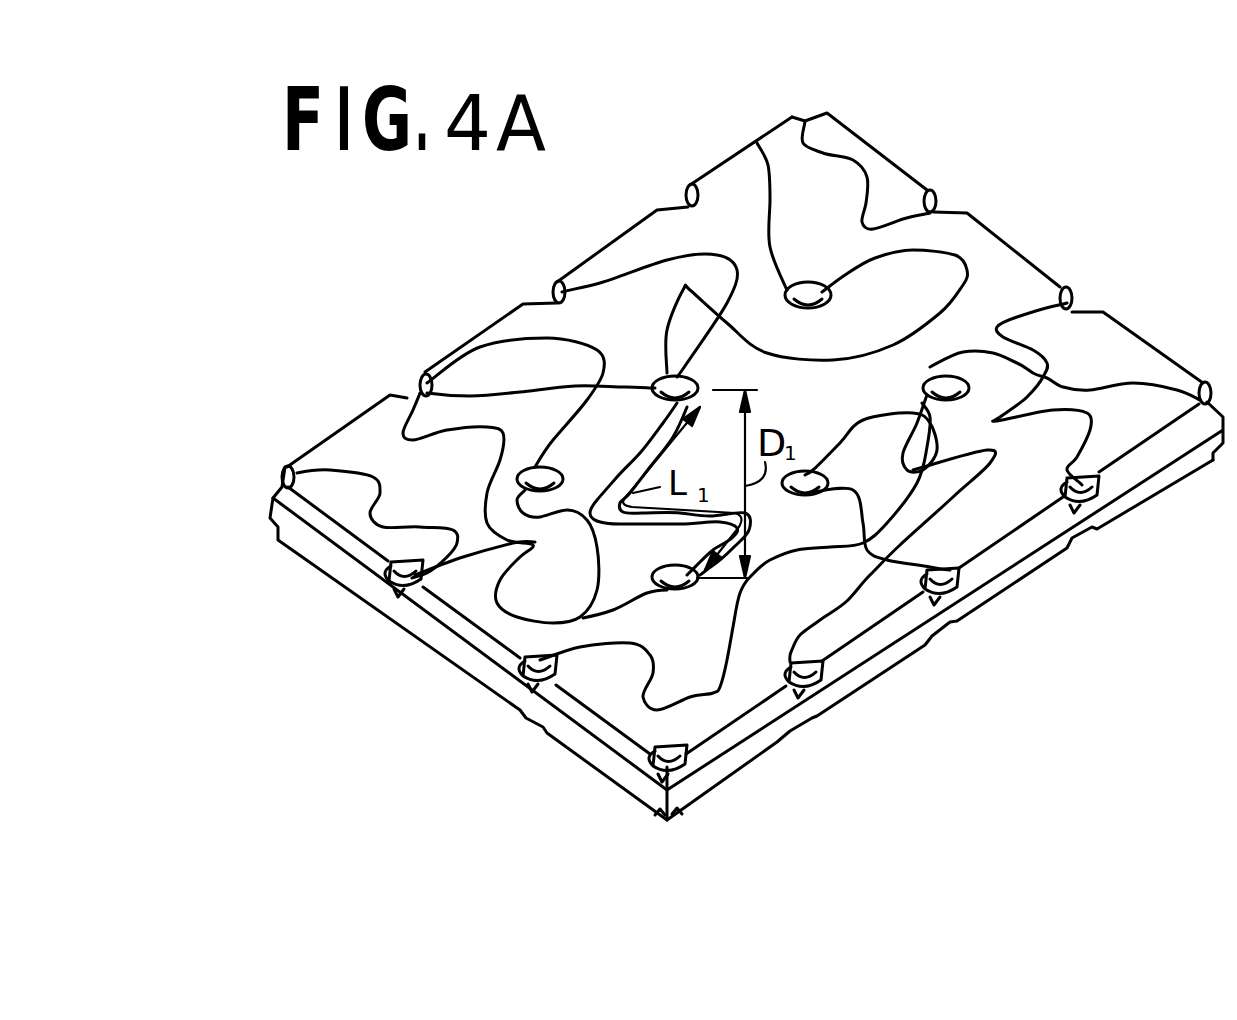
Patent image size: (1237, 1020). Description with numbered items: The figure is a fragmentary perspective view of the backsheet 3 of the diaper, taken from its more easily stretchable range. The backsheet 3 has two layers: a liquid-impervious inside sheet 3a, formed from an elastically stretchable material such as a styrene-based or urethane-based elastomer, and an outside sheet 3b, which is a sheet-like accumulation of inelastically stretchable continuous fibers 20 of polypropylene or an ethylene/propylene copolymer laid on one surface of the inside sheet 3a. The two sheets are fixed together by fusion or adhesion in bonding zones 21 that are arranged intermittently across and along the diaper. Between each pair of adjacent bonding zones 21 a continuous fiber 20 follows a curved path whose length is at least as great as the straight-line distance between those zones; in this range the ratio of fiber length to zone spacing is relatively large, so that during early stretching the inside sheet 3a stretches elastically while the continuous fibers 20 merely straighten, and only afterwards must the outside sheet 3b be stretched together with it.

The backsheet 3 is at (1069, 196).
The inside sheet 3a is at (328, 567).
The outside sheet 3b is at (370, 560).
The continuous fibers 20 is at (868, 222).
The bonding zones 21 is at (690, 765).